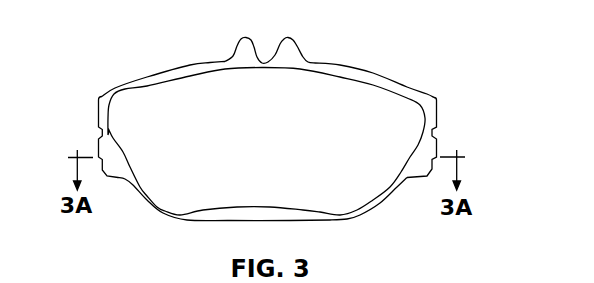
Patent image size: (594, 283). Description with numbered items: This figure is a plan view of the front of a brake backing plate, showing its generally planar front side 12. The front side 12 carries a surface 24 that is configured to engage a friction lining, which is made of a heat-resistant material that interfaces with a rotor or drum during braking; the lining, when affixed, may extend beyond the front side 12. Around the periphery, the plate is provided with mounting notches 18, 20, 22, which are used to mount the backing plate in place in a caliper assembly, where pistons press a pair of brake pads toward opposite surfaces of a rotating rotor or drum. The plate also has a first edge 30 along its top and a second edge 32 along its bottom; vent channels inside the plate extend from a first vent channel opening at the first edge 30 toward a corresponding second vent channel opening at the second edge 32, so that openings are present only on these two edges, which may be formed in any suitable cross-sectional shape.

The front side 12 is at (268, 136).
The mounting notch 18 is at (99, 130).
The mounting notch 20 is at (266, 50).
The mounting notch 22 is at (438, 135).
The surface 24 is at (210, 87).
The first edge 30 is at (147, 76).
The second edge 32 is at (268, 221).